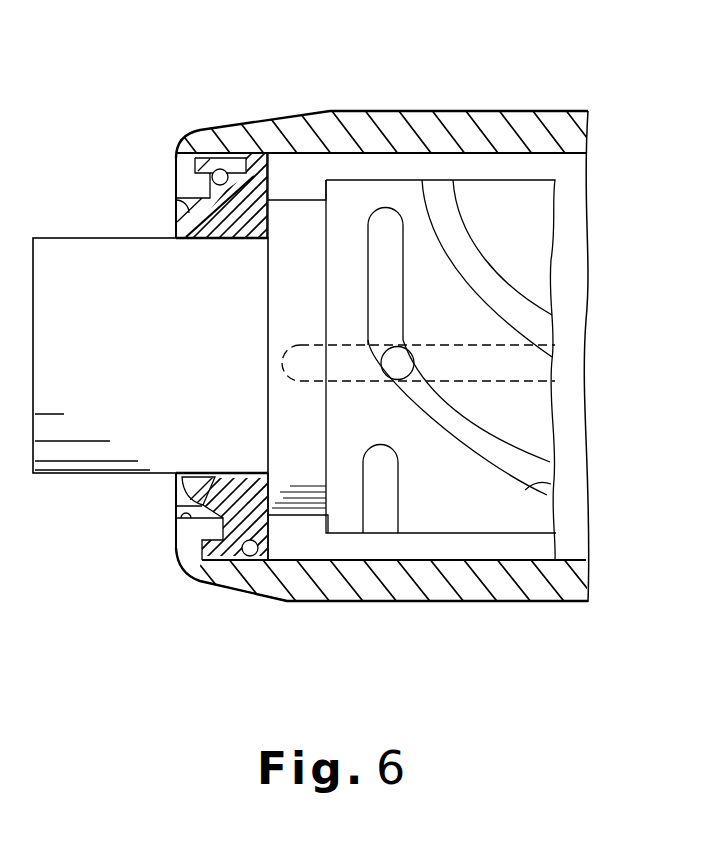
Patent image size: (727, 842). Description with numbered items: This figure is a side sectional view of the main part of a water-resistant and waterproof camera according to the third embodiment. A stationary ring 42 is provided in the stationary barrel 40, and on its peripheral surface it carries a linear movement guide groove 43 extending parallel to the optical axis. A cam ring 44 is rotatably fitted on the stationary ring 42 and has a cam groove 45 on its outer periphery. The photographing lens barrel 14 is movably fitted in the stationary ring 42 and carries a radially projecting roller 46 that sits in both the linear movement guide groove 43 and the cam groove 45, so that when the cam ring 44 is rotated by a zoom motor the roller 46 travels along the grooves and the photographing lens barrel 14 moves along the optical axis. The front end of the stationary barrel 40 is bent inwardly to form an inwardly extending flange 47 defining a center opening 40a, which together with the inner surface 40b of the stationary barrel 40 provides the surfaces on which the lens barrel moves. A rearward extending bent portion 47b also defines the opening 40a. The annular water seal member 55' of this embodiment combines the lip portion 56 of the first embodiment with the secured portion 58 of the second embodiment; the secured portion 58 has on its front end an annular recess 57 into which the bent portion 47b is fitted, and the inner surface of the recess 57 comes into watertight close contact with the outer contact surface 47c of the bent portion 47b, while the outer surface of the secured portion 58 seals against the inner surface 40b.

The photographing lens barrel 14 is at (77, 245).
The stationary barrel 40 is at (479, 120).
The center opening 40a is at (176, 215).
The inner surface of the stationary barrel 40b is at (261, 545).
The stationary ring 42 is at (298, 227).
The linear movement guide groove 43 is at (503, 378).
The cam ring 44 is at (533, 215).
The cam groove 45 is at (550, 490).
The roller 46 is at (405, 373).
The inwardly extending flange 47 is at (189, 538).
The rearward extending bent portion 47b is at (210, 545).
The outer contact surface 47c is at (237, 172).
The annular water seal member 55' is at (245, 109).
The lip portion 56 is at (186, 232).
The annular recess 57 is at (214, 172).
The secured portion 58 is at (267, 560).